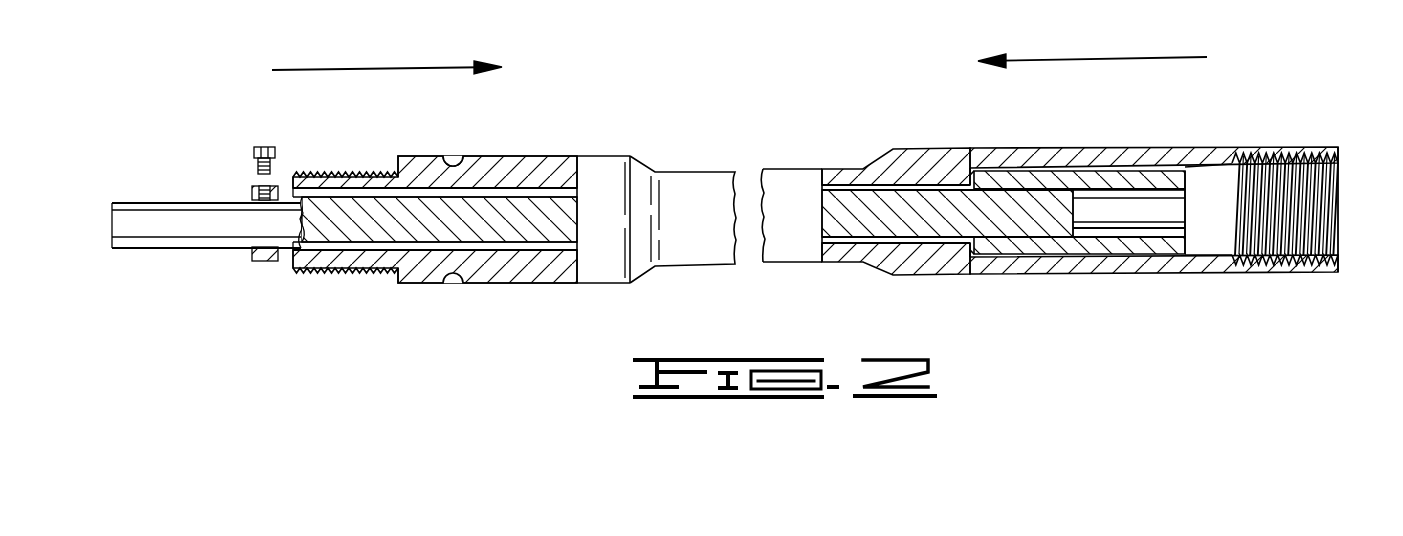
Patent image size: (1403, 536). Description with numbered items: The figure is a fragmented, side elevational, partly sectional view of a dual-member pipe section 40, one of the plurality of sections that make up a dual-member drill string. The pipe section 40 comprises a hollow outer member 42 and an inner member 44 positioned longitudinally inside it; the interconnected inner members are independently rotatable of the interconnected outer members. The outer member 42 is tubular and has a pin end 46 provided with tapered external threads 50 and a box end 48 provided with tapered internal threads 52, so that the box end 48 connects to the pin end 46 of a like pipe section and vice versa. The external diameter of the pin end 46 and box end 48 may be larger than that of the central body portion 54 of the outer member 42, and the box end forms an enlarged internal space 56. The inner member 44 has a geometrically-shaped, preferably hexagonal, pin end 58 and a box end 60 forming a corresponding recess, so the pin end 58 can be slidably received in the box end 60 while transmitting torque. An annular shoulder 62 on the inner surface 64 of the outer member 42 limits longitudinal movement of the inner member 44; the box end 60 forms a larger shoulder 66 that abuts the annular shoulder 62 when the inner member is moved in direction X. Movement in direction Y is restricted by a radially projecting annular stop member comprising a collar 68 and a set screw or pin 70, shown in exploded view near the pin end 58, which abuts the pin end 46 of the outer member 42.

The dual-member pipe section 40 is at (794, 72).
The outer member 42 is at (518, 156).
The inner member 44 is at (423, 242).
The pin end 46 is at (420, 156).
The box end 48 is at (1288, 272).
The tapered external threads 50 is at (331, 274).
The tapered internal threads 52 is at (1340, 238).
The central body portion 54 is at (690, 171).
The enlarged internal space 56 is at (1208, 188).
The pin end 58 is at (175, 250).
The box end 60 is at (1112, 250).
The annular shoulder 62 is at (964, 166).
The inner surface 64 is at (1203, 242).
The shoulder 66 is at (978, 170).
The stop collar 68 is at (262, 261).
The set screw 70 is at (266, 146).